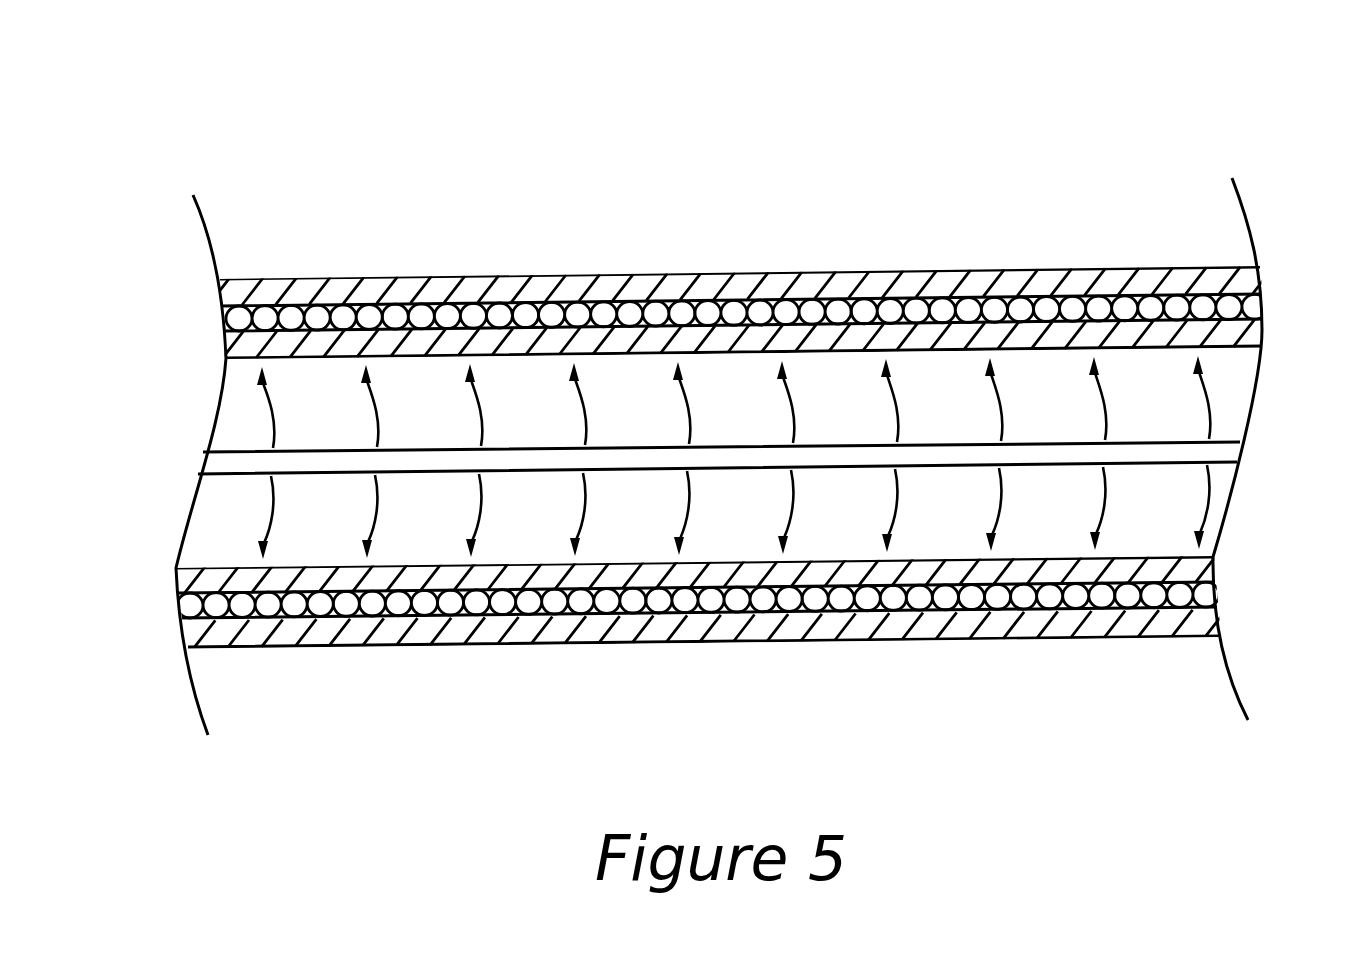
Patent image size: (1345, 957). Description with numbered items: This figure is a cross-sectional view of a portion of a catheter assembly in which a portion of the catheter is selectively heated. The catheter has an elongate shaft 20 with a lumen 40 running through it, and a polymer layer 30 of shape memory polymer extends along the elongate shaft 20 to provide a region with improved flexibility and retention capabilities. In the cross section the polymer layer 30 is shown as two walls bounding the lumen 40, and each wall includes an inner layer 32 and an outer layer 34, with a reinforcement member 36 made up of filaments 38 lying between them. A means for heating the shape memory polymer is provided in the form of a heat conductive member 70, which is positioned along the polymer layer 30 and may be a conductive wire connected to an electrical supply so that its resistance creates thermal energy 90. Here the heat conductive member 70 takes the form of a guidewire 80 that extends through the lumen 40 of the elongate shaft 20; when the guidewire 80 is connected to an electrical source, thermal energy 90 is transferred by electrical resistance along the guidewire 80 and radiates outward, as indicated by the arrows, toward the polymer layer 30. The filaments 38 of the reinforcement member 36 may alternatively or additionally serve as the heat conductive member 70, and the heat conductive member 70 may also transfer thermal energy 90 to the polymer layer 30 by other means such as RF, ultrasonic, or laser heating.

The elongate shaft 20 is at (748, 122).
The polymer layer 30 is at (462, 279).
The inner layer 32 is at (237, 347).
The outer layer 34 is at (237, 293).
The reinforcement member 36 is at (228, 322).
The filament 38 is at (180, 608).
The lumen 40 is at (222, 520).
The heat conductive member 70 is at (1222, 450).
The guidewire 80 is at (228, 465).
The thermal energy 90 is at (270, 418).